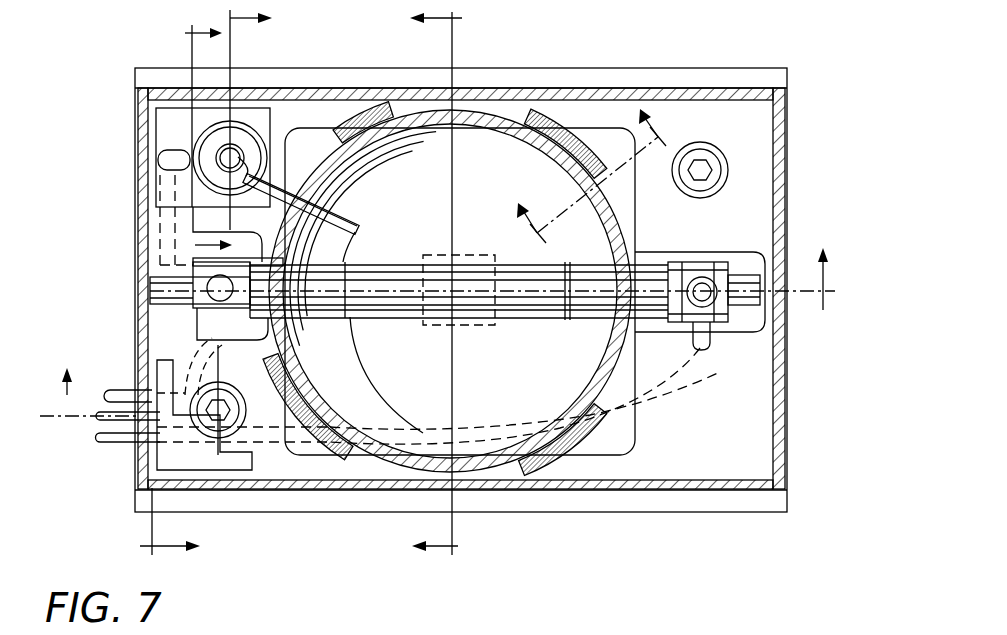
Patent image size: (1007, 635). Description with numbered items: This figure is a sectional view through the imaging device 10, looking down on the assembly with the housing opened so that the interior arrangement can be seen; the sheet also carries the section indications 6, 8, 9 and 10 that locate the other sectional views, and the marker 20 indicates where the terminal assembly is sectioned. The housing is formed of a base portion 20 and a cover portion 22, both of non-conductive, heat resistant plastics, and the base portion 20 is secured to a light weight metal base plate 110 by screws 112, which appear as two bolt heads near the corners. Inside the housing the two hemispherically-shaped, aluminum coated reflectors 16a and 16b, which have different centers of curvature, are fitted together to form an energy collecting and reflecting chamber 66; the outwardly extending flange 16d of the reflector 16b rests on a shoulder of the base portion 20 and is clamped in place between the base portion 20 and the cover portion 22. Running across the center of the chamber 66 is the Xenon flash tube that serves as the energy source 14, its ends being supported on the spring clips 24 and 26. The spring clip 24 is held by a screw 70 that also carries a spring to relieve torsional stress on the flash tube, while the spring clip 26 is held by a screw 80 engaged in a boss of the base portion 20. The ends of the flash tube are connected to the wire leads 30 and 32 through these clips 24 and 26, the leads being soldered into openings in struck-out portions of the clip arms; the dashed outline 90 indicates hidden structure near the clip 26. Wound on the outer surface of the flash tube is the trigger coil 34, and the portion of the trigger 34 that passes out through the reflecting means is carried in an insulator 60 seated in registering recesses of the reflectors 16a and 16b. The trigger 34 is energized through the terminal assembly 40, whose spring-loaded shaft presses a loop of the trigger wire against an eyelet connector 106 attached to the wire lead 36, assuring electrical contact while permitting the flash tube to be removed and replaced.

The cover portion 22 is at (788, 378).
The base plate 110 is at (523, 68).
The energy source 14 is at (568, 265).
The reflector 16a is at (532, 140).
The reflector 16b is at (372, 402).
The flange 16d is at (572, 458).
The spring clip 26 is at (150, 302).
The energy collecting and reflecting chamber 66 is at (496, 365).
The trigger coil 34 is at (340, 318).
The screw 80 is at (195, 278).
The bearing housing 90 is at (160, 236).
The spring clip 24 is at (700, 266).
The screw 70 is at (722, 335).
The terminal assembly 40 is at (257, 126).
The eyelet connector 106 is at (158, 158).
The insulator 60 is at (343, 207).
The screws 112 is at (712, 170).
The wire lead 36 is at (113, 390).
The wire lead 32 is at (100, 420).
The wire lead 30 is at (100, 443).
The base portion 20 is at (209, 140).
The section line 8- 8 is at (216, 284).
The section line 9- 9 is at (427, 284).
The section line 6- 6 is at (436, 317).
The imaging device 10 is at (584, 168).